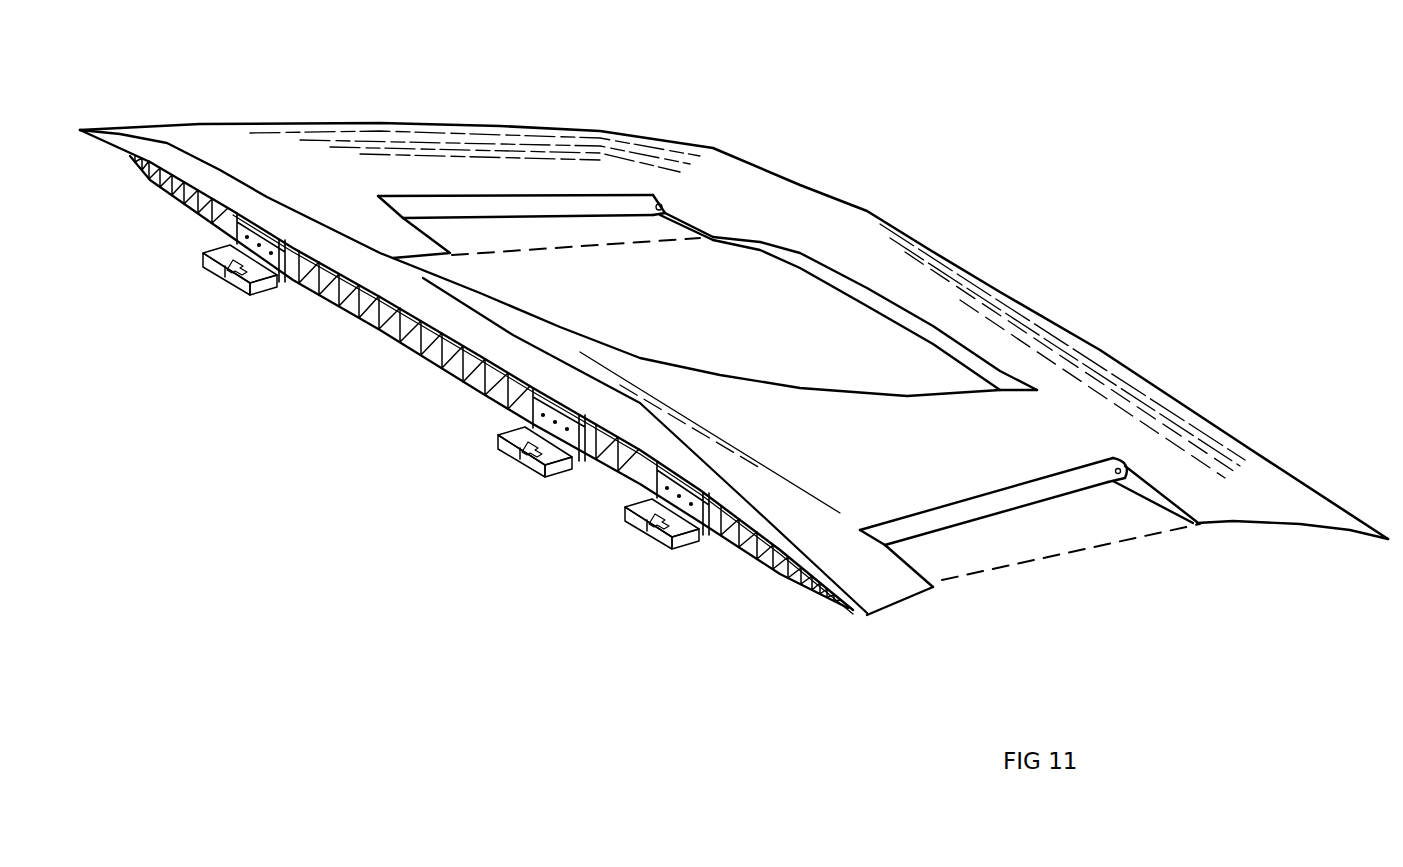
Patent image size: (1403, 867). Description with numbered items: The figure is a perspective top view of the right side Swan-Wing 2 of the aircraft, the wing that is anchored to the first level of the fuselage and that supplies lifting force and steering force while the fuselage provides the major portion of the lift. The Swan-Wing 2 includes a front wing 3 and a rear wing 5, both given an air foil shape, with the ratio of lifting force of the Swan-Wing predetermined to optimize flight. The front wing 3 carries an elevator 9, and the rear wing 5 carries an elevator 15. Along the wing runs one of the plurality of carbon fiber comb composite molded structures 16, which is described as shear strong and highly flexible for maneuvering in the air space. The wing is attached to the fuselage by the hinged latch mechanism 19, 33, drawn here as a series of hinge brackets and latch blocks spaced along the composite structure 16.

The Swan-Wing 2 is at (908, 253).
The front wing 3 is at (448, 178).
The elevator 9 is at (568, 237).
The rear wing 5 is at (930, 465).
The elevator 15 is at (1077, 518).
The carbon fiber comb composite molded structure 16 is at (413, 345).
The hinged latch mechanism 19 is at (309, 288).
The hinged latch mechanism 33 is at (253, 297).